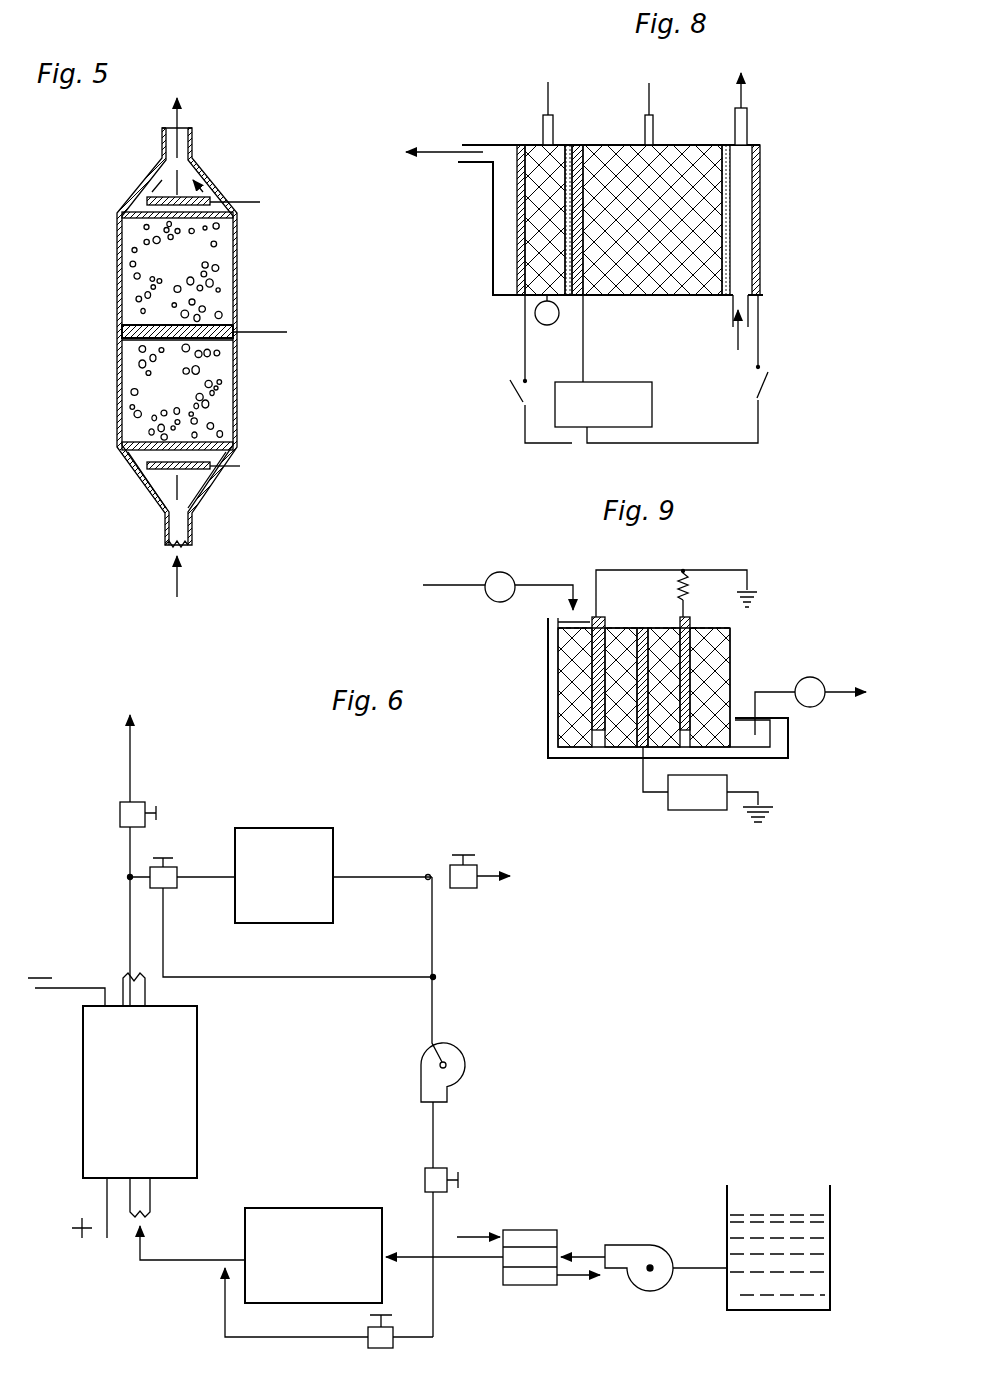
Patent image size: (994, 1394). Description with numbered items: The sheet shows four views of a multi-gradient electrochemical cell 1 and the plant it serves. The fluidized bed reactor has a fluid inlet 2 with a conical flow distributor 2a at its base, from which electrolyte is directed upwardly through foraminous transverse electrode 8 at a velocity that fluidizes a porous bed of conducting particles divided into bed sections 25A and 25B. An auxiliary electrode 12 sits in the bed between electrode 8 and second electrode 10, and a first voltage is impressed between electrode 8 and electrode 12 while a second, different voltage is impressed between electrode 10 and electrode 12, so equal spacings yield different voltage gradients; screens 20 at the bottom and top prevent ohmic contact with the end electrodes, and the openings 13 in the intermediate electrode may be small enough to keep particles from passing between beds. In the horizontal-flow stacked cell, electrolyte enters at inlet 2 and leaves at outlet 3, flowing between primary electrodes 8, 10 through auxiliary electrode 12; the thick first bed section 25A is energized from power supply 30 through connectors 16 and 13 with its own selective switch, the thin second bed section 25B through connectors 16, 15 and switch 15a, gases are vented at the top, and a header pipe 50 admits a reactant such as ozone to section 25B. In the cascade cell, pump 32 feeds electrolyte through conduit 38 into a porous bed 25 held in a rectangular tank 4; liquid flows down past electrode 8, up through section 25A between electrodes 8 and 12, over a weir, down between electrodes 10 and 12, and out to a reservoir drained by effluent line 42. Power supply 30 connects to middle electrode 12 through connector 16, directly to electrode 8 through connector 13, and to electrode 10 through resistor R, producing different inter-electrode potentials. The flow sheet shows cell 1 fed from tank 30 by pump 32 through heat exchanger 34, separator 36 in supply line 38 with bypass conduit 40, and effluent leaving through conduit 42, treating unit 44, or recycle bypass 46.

In FIG. 5, the cell 1 is at (237, 275).
In FIG. 8, the cell 1 is at (636, 295).
In FIG. 9, the cell 1 is at (548, 695).
In FIG. 6, the cell 1 is at (188, 1044).
In FIG. 5, the fluid inlet 2 is at (192, 531).
In FIG. 8, the fluid inlet 2 is at (731, 305).
In FIG. 5, the conical flow distributor 2a is at (212, 483).
In FIG. 5, the outlet 3 is at (194, 137).
In FIG. 8, the outlet 3 is at (476, 144).
In FIG. 9, the rectangular tank 4 is at (577, 760).
In FIG. 5, the first electrode 8 is at (150, 481).
In FIG. 8, the first electrode 8 is at (762, 153).
In FIG. 9, the first electrode 8 is at (598, 617).
In FIG. 5, the second electrode 10 is at (198, 199).
In FIG. 8, the second electrode 10 is at (520, 145).
In FIG. 9, the second electrode 10 is at (690, 618).
In FIG. 5, the auxiliary electrode 12 is at (135, 343).
In FIG. 8, the auxiliary electrode 12 is at (584, 145).
In FIG. 9, the auxiliary electrode 12 is at (642, 628).
In FIG. 5, the connector 13 is at (150, 332).
In FIG. 8, the connector 13 is at (760, 341).
In FIG. 9, the connector 13 is at (615, 570).
In FIG. 8, the connector 15 is at (524, 322).
In FIG. 8, the switch 15a is at (509, 398).
In FIG. 8, the connector 16 is at (584, 355).
In FIG. 9, the connector 16 is at (686, 598).
In FIG. 5, the screens 20 is at (212, 446).
In FIG. 9, the porous bed 25 is at (583, 697).
In FIG. 5, the first bed section 25A is at (190, 404).
In FIG. 8, the first bed section 25A is at (667, 224).
In FIG. 9, the first bed section 25A is at (637, 711).
In FIG. 5, the second bed section 25B is at (197, 277).
In FIG. 8, the second bed section 25B is at (563, 224).
In FIG. 9, the second bed section 25B is at (680, 711).
In FIG. 8, the power supply 30 is at (653, 401).
In FIG. 9, the power supply 30 is at (698, 810).
In FIG. 6, the power supply 30 is at (767, 1222).
In FIG. 9, the pump 32 is at (487, 598).
In FIG. 6, the pump 32 is at (650, 1265).
In FIG. 6, the heat exchanger 34 is at (516, 1276).
In FIG. 6, the separator 36 is at (333, 1208).
In FIG. 9, the electrolyte supply line 38 is at (537, 585).
In FIG. 6, the electrolyte supply line 38 is at (175, 1260).
In FIG. 6, the bypass conduit 40 is at (297, 1338).
In FIG. 9, the conduit 42 is at (812, 677).
In FIG. 6, the conduit 42 is at (130, 768).
In FIG. 6, the treating unit 44 is at (281, 843).
In FIG. 6, the bypass 46 is at (433, 1010).
In FIG. 8, the header pipe 50 is at (547, 326).
In FIG. 9, the resistor R is at (698, 578).